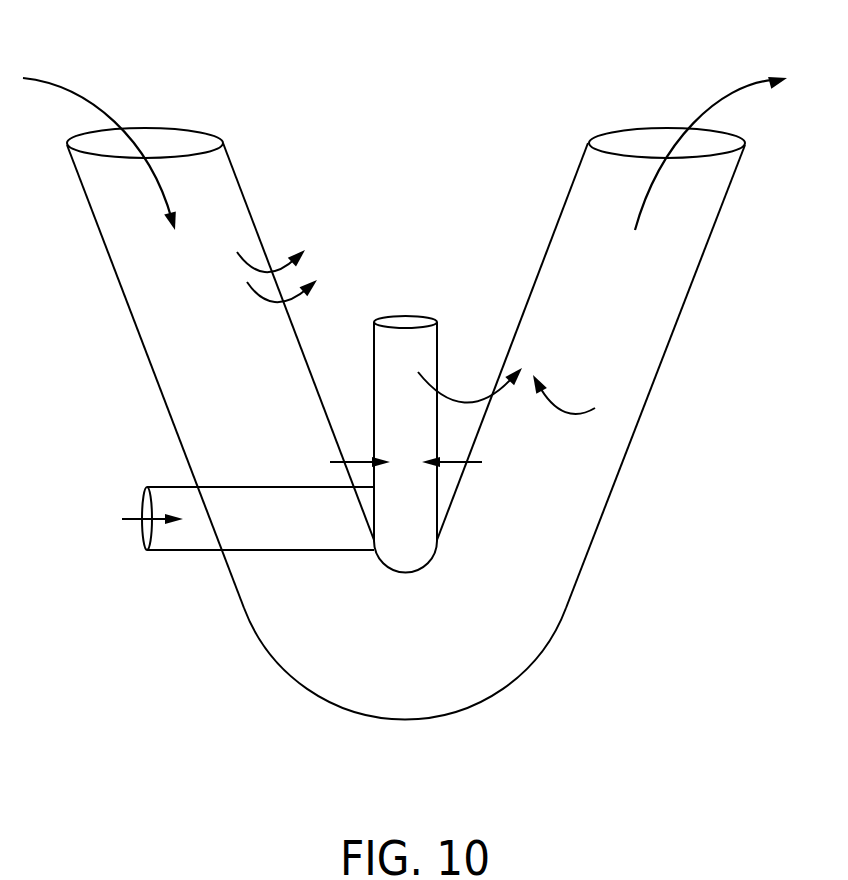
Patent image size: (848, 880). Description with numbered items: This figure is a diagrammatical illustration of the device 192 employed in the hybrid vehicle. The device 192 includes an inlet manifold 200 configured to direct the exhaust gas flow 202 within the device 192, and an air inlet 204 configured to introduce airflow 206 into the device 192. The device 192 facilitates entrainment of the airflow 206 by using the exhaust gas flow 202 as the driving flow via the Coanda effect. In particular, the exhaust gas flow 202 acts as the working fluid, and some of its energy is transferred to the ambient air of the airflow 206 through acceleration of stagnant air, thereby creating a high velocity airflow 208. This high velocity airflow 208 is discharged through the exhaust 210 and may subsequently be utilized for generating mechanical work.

The device 192 is at (405, 320).
The inlet manifold 200 is at (202, 541).
The exhaust gas flow 202 is at (133, 523).
The air inlet 204 is at (247, 193).
The airflow 206 is at (85, 93).
The high velocity airflow 208 is at (727, 92).
The exhaust 210 is at (678, 332).